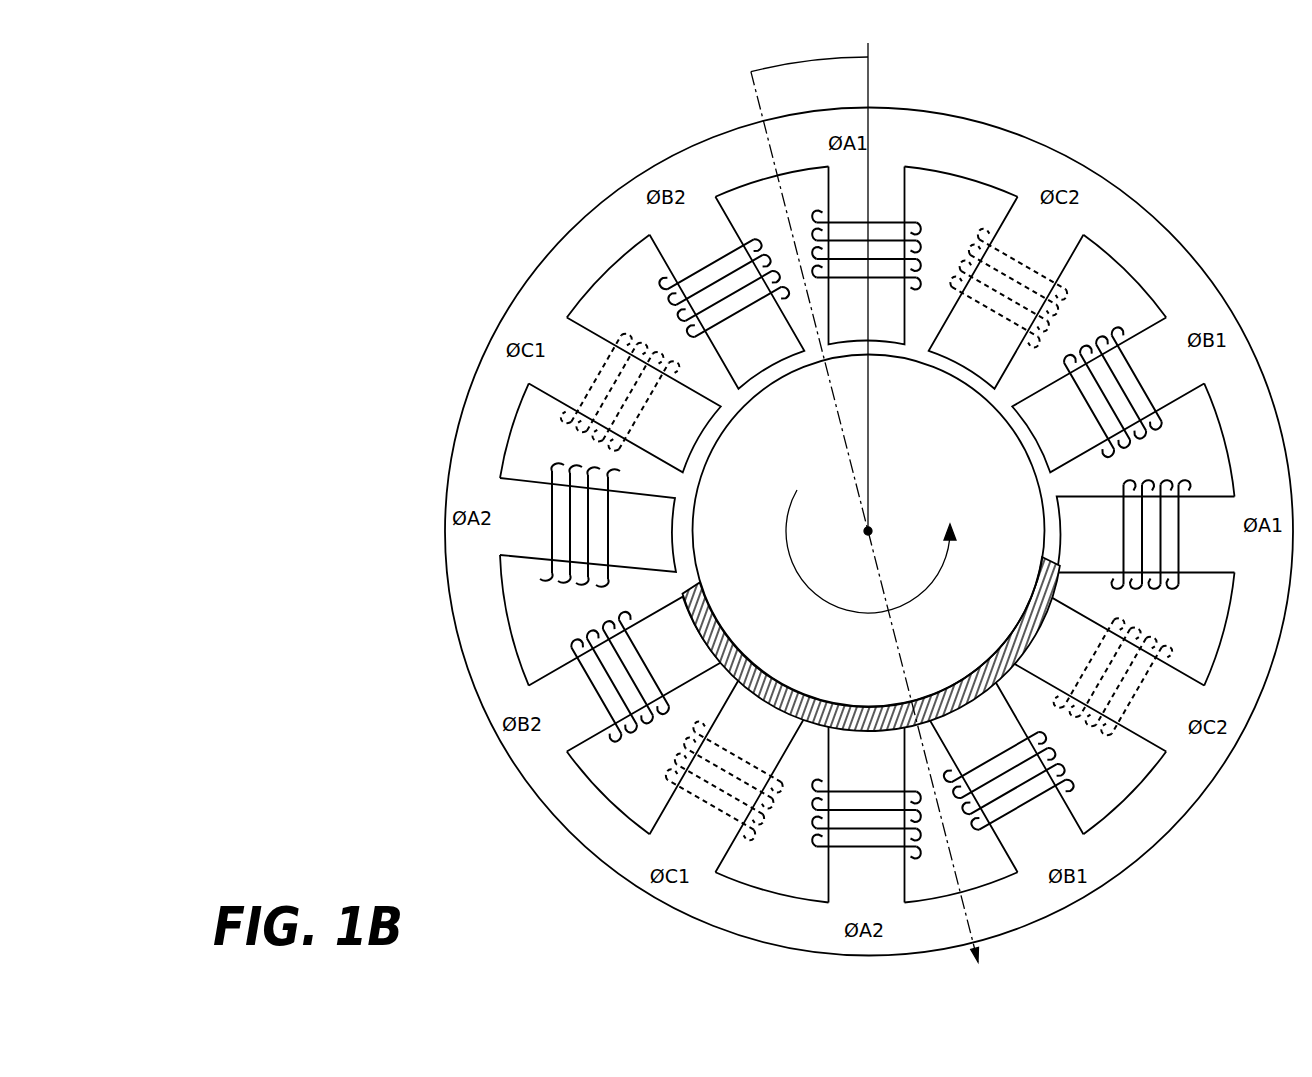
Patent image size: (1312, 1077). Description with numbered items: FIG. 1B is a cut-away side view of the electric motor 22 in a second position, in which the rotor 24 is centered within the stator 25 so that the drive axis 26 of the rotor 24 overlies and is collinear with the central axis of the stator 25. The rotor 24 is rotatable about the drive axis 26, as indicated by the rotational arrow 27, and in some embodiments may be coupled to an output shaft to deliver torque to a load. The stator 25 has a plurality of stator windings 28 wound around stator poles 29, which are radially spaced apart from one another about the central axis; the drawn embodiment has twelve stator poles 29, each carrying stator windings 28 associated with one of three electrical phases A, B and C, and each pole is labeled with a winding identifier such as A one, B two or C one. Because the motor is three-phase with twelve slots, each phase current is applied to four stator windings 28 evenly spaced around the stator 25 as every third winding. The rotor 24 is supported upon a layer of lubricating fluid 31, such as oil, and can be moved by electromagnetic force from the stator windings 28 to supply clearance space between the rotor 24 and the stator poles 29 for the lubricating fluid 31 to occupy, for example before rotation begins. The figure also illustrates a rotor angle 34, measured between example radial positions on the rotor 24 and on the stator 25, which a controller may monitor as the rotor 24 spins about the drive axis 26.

The electric motor 22 is at (566, 178).
The rotor 24 is at (985, 440).
The stator 25 is at (1032, 150).
The drive axis 26 is at (868, 531).
The rotational arrow 27 is at (945, 578).
The stator windings 28 is at (867, 531).
The stator poles 29 is at (763, 354).
The lubricating fluid 31 is at (1045, 575).
The rotor angle 34 is at (817, 62).